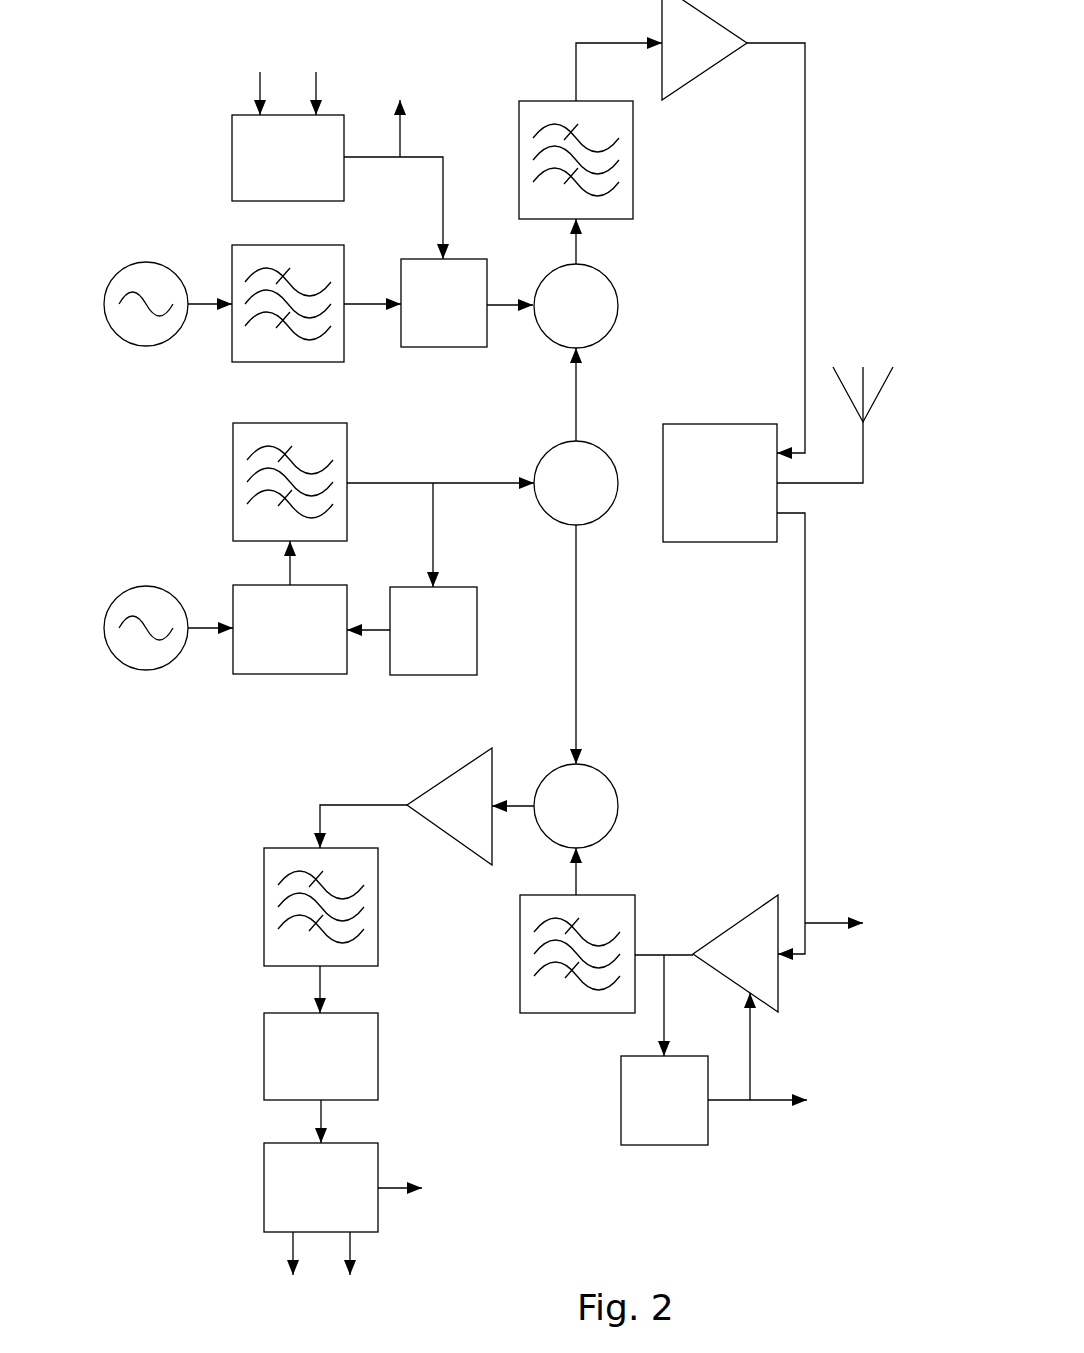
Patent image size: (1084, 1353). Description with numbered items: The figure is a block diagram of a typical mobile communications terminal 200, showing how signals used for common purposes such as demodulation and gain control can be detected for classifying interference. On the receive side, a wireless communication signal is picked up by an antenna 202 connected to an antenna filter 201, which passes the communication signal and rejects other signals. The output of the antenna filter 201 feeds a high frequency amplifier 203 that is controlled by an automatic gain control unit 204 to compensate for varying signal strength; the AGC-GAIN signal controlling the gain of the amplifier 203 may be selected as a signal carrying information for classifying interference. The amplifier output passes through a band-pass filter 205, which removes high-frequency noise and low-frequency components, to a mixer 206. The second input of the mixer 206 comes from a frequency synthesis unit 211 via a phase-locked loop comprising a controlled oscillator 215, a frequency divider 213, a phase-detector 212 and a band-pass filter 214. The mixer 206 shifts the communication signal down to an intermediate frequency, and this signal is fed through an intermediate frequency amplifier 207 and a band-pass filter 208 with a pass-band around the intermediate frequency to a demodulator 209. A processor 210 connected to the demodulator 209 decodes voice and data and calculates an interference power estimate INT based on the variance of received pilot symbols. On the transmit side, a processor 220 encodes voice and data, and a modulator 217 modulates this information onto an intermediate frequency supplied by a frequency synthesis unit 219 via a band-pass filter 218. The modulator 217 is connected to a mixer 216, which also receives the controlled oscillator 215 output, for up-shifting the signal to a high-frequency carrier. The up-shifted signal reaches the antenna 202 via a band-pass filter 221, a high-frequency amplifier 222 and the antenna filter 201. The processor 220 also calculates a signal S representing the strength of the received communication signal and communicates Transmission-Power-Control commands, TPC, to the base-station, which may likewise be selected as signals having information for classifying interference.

The transceiver 200 is at (147, 40).
The antenna filter 201 is at (747, 422).
The antenna 202 is at (837, 483).
The high frequency amplifier 203 is at (743, 917).
The automatic gain control unit 204 is at (663, 1147).
The band-pass filter 205 is at (575, 1015).
The mixer 206 is at (620, 807).
The intermediate frequency amplifier 207 is at (455, 767).
The band-pass filter 208 is at (263, 905).
The demodulator 209 is at (263, 1053).
The processor 210 is at (263, 1187).
The frequency synthesis unit 211 is at (147, 675).
The phase-detector 212 is at (293, 675).
The frequency divider 213 is at (478, 630).
The band-pass filter 214 is at (233, 480).
The controlled oscillator 215 is at (545, 450).
The mixer 216 is at (620, 307).
The modulator 217 is at (442, 352).
The band-pass filter 218 is at (233, 328).
The frequency synthesis unit 219 is at (147, 257).
The processor 220 is at (232, 155).
The band-pass filter 221 is at (637, 163).
The high-frequency amplifier 222 is at (697, 79).